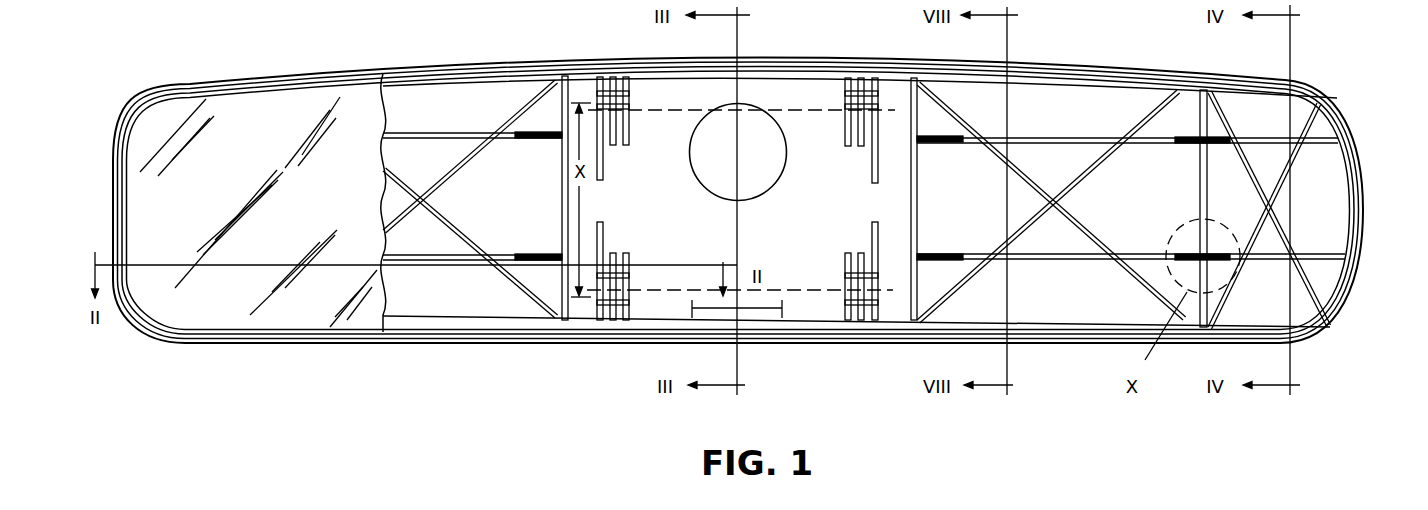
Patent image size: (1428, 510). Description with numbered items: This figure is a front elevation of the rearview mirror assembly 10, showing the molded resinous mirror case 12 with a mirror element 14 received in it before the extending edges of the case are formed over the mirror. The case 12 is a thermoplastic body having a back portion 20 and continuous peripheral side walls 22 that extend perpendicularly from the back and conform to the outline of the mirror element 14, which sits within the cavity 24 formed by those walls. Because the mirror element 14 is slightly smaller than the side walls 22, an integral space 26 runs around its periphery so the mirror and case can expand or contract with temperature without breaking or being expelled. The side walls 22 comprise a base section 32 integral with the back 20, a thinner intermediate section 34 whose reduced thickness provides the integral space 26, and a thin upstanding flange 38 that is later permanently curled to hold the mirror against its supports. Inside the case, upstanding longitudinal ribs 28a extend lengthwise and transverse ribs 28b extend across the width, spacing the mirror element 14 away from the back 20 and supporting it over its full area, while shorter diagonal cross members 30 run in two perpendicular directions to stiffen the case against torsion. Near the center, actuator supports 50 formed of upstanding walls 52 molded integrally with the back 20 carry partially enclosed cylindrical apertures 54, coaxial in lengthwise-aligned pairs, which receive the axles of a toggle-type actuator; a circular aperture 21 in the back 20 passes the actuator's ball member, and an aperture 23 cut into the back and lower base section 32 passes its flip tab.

The rearview mirror assembly 10 is at (231, 39).
The mirror case 12 is at (416, 54).
The mirror element 14 is at (196, 185).
The back portion 20 is at (771, 223).
The circular aperture 21 is at (718, 185).
The peripheral side walls 22 is at (582, 62).
The aperture 23 is at (693, 313).
The cavity 24 is at (807, 124).
The integral space 26 is at (181, 325).
The longitudinal ribs 28a is at (496, 140).
The transverse ribs 28b is at (568, 201).
The cross members 30 is at (515, 110).
The base section 32 is at (1336, 233).
The intermediate section 34 is at (1338, 196).
The flange 38 is at (1356, 157).
The actuator supports 50 is at (647, 228).
The upstanding walls 52 is at (613, 146).
The cylindrical aperture 54 is at (613, 102).